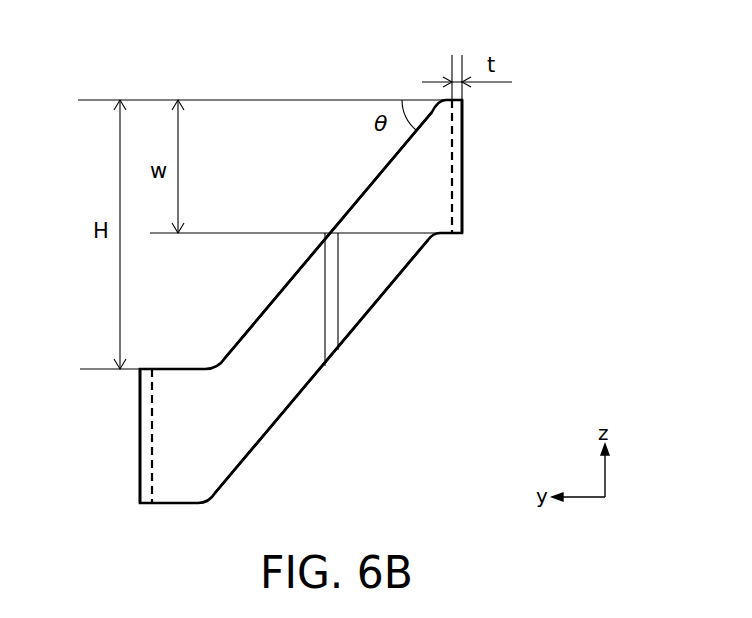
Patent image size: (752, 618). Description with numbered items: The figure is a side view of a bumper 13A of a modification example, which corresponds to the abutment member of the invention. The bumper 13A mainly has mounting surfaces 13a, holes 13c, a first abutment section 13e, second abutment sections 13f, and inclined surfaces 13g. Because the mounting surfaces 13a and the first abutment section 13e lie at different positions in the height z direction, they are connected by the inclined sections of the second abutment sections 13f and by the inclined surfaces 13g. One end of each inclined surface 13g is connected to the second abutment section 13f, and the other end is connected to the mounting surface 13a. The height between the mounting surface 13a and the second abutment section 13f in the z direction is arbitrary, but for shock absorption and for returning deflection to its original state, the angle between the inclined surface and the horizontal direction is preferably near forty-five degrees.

The bumper 13A is at (522, 101).
The holes 13c is at (458, 165).
The mounting surfaces 13a is at (457, 203).
The first abutment section 13e is at (150, 417).
The second abutment sections 13f is at (245, 360).
The inclined surfaces 13g is at (365, 290).